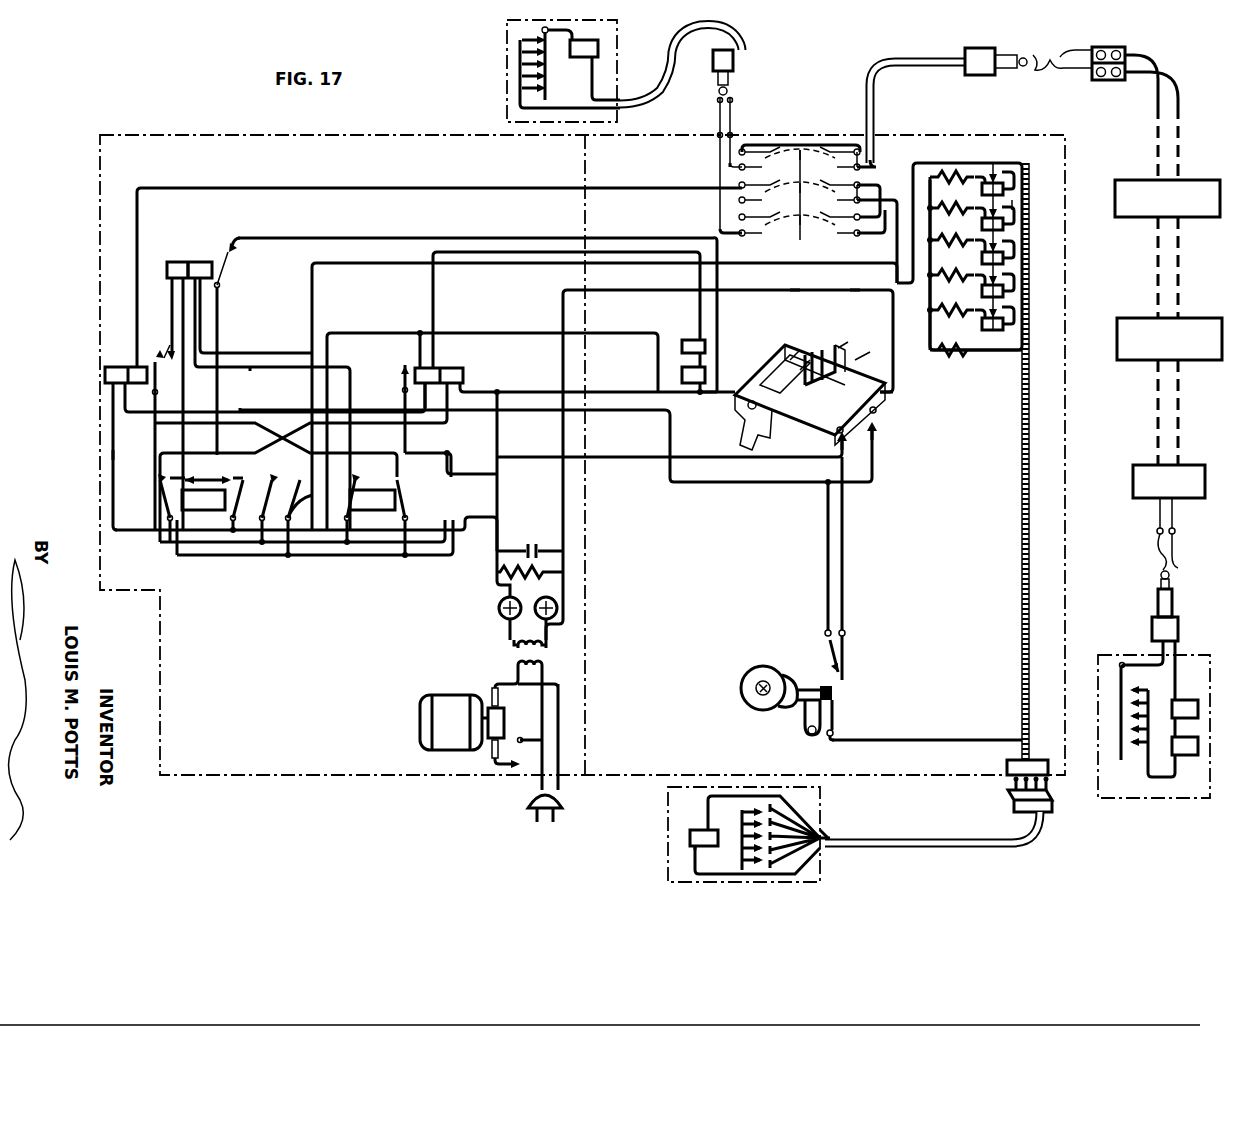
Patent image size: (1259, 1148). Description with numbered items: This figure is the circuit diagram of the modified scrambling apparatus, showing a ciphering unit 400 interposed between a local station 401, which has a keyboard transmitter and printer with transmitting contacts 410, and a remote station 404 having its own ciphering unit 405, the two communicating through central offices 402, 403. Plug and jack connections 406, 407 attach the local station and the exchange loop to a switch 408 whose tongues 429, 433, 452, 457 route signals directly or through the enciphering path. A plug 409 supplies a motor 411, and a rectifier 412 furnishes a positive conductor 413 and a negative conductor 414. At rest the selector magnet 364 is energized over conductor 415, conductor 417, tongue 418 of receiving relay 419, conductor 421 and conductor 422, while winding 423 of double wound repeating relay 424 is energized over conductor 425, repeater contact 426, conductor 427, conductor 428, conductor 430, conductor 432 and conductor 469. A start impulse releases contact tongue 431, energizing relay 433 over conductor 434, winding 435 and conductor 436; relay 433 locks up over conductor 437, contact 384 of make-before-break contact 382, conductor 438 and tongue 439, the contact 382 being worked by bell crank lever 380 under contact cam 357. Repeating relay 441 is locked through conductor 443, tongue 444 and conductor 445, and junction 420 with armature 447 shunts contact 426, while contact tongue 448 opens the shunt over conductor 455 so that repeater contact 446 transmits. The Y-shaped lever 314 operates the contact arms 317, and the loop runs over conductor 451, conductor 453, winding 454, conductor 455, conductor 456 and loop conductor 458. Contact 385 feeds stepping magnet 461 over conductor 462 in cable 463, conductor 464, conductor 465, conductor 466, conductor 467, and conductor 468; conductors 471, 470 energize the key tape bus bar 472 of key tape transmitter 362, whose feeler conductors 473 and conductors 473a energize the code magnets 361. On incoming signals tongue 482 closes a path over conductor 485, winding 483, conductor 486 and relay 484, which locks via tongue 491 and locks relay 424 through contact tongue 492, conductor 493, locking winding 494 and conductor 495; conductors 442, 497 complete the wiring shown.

The ciphering unit 400 is at (100, 153).
The local station 401 is at (508, 88).
The central office 402 is at (1150, 207).
The central office 403 is at (1135, 338).
The remote station 404 is at (1190, 674).
The ciphering unit 405 is at (1140, 468).
The plug and jack connection 406 is at (730, 78).
The plug connection 407 is at (1034, 55).
The switch 408 is at (810, 146).
The plug 409 is at (538, 800).
The transmitting contacts 410 is at (520, 58).
The motor 411 is at (450, 690).
The rectifier 412 is at (496, 613).
The positive conductor 413 is at (565, 605).
The negative conductor 414 is at (495, 570).
The conductor 415 is at (645, 390).
The conductor 417 is at (460, 236).
The tongue 418 is at (222, 280).
The receiving relay 419 is at (189, 260).
The junction 420 is at (258, 413).
The conductor 421 is at (220, 340).
The conductor 422 is at (422, 453).
The winding 423 is at (130, 362).
The double wound repeating relay 424 is at (108, 368).
The conductor 425 is at (645, 470).
The repeater contact 426 is at (862, 460).
The conductor 427 is at (645, 422).
The conductor 428 is at (273, 187).
The tongue 429 is at (725, 172).
The conductor 430 is at (735, 133).
The contact tongue 431 is at (167, 352).
The conductor 432 is at (718, 205).
The relay 433 is at (725, 225).
The conductor 434 is at (186, 420).
The winding 435 is at (178, 264).
The conductor 436 is at (172, 290).
The conductor 437 is at (846, 590).
The conductor 438 is at (826, 592).
The tongue 439 is at (243, 480).
The double wound repeating relay 441 is at (441, 370).
The conductor 442 is at (466, 374).
The conductor 443 is at (398, 428).
The tongue 444 is at (158, 488).
The conductor 445 is at (345, 558).
The repeater contact 446 is at (878, 422).
The armature 447 is at (272, 492).
The contact tongue 448 is at (305, 545).
The conductor 451 is at (870, 160).
The tongue 452 is at (855, 180).
The conductor 453 is at (862, 292).
The winding 454 is at (438, 387).
The conductor 455 is at (520, 332).
The conductor 456 is at (893, 392).
The tongue 457 is at (810, 215).
The loop conductor 458 is at (880, 140).
The stepping magnet 461 is at (703, 828).
The conductor 462 is at (945, 738).
The cable 463 is at (1015, 612).
The conductor 464 is at (805, 815).
The conductor 465 is at (692, 860).
The conductor 466 is at (1008, 350).
The conductor 467 is at (930, 318).
The conductor 468 is at (812, 290).
The conductor 469 is at (718, 365).
The conductor 470 is at (830, 852).
The conductor 471 is at (958, 170).
The key tape bus bar 472 is at (742, 848).
The conductor 473 is at (818, 832).
The conductor 473a is at (1013, 300).
The tongue 482 is at (398, 368).
The winding 483 is at (226, 248).
The relay 484 is at (372, 509).
The conductor 485 is at (300, 370).
The conductor 486 is at (292, 348).
The tongue 491 is at (325, 495).
The contact tongue 492 is at (415, 492).
The conductor 493 is at (282, 420).
The locking winding 494 is at (116, 372).
The conductor 495 is at (108, 455).
The conductor 497 is at (386, 262).
The Y-shaped lever 314 is at (790, 415).
The contact arms 317 is at (848, 368).
The contact cam 357 is at (748, 676).
The code magnets 361 is at (995, 180).
The key tape transmitter 362 is at (668, 820).
The selector magnet 364 is at (693, 338).
The bell crank lever 380 is at (800, 695).
The make-before-break contact 382 is at (842, 674).
The contact 384 is at (842, 656).
The contact 385 is at (825, 668).